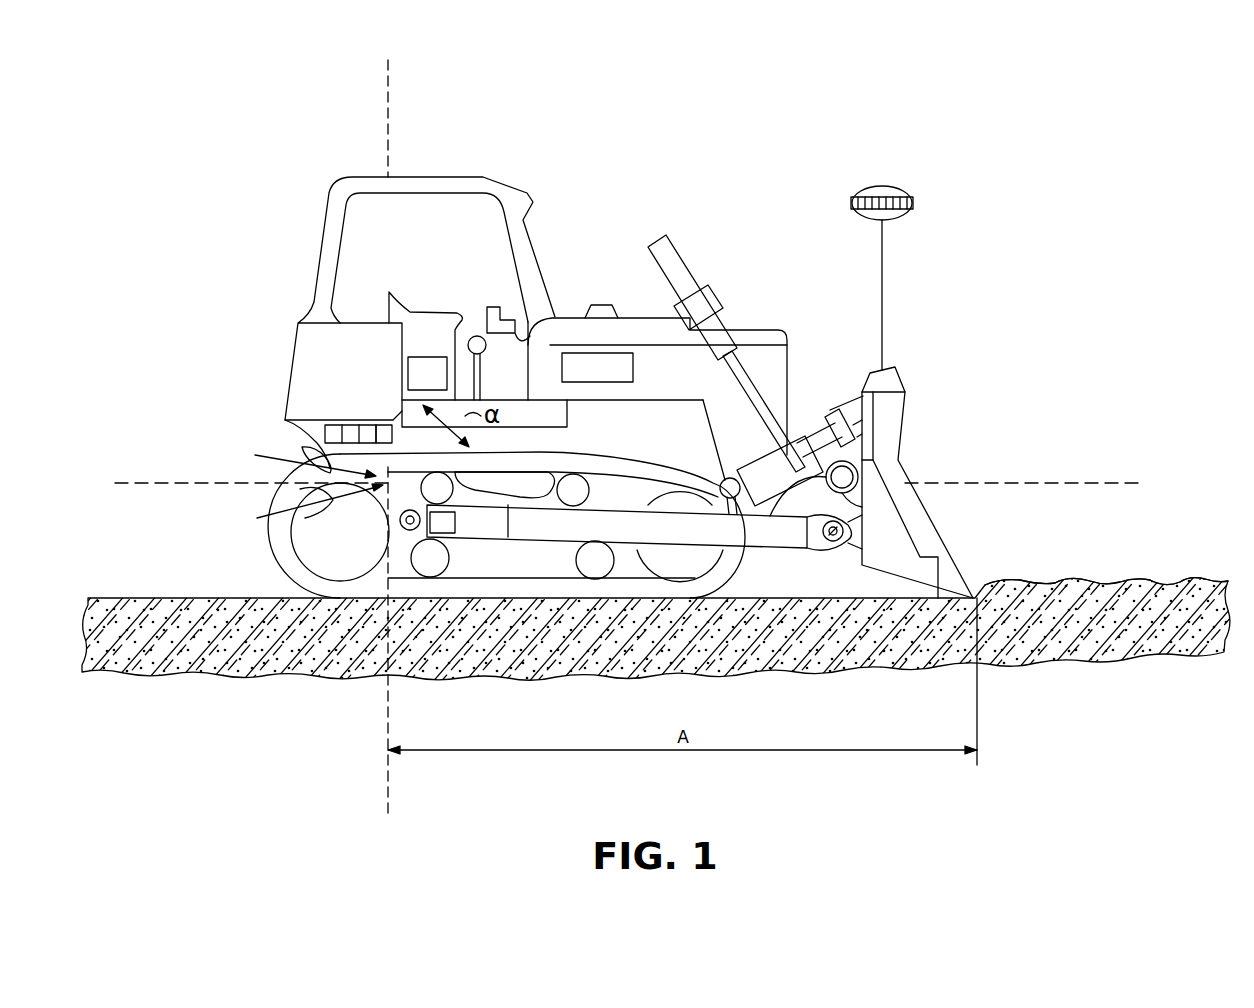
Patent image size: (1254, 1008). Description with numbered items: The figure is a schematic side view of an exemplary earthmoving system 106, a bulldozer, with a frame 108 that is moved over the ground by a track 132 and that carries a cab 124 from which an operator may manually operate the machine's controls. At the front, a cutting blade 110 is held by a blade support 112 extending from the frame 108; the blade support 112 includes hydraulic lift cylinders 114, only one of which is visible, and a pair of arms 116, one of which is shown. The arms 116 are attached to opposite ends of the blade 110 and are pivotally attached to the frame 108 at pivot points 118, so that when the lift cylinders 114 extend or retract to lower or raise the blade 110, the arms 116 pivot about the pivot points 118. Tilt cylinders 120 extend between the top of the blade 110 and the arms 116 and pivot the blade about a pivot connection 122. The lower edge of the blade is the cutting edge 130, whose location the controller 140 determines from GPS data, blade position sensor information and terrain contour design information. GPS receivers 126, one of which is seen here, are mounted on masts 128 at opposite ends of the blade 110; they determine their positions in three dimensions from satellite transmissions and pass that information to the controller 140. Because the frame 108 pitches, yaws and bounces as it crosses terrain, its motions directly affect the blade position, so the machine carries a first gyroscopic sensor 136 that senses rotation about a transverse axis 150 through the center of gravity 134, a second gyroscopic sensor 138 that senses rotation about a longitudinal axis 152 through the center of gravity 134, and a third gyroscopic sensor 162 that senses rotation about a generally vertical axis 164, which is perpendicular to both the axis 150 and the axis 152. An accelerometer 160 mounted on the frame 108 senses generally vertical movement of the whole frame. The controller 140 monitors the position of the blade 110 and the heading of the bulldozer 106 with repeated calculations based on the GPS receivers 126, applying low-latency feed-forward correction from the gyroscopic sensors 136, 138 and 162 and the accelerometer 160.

The earthmoving system 106 is at (532, 180).
The frame 108 is at (648, 436).
The cutting blade 110 is at (935, 548).
The blade support 112 is at (792, 243).
The hydraulic lift cylinders 114 is at (688, 263).
The arms 116 is at (778, 535).
The pivot points 118 is at (400, 522).
The tilt cylinders 120 is at (762, 470).
The pivot connection 122 is at (842, 530).
The cab 124 is at (322, 237).
The GPS receivers 126 is at (915, 205).
The masts 128 is at (884, 287).
The cutting edge 130 is at (990, 584).
The track 132 is at (284, 552).
The center of gravity 134 is at (294, 460).
The first gyroscopic sensor 136 is at (607, 365).
The second gyroscopic sensor 138 is at (325, 432).
The controller 140 is at (428, 368).
The transverse axis 150 is at (298, 509).
The longitudinal axis 152 is at (1085, 481).
The accelerometer 160 is at (370, 425).
The third gyroscopic sensor 162 is at (387, 425).
The vertical axis 164 is at (382, 110).